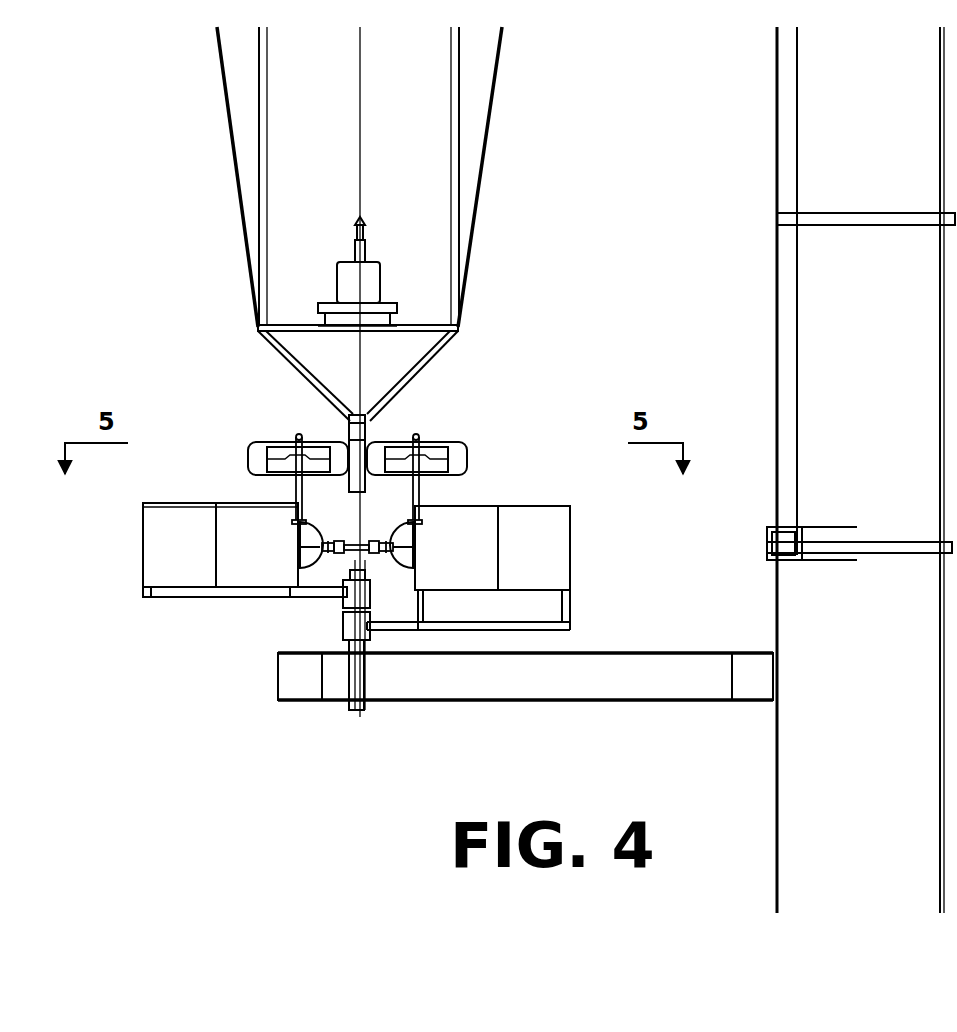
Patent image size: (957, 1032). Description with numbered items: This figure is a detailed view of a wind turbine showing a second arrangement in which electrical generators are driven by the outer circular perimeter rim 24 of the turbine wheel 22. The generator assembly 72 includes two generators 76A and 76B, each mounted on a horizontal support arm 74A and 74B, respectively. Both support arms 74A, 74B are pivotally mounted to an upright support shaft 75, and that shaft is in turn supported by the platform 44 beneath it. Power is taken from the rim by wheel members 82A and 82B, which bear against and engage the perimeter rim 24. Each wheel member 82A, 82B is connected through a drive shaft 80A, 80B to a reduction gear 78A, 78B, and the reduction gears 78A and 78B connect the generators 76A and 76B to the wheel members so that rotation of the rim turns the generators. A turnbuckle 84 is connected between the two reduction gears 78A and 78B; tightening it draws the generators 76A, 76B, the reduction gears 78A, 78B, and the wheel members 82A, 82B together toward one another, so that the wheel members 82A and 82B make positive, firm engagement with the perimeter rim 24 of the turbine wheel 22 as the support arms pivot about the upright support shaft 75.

The turbine wheel 22 is at (507, 222).
The generator assembly 72 is at (577, 340).
The perimeter rim 24 is at (368, 432).
The wheel member 82A is at (250, 445).
The wheel member 82B is at (470, 445).
The drive shaft 80A is at (294, 490).
The drive shaft 80B is at (421, 490).
The reduction gear 78A is at (343, 510).
The reduction gear 78B is at (397, 535).
The turnbuckle 84 is at (353, 555).
The generator 76A is at (204, 508).
The generator 76B is at (530, 512).
The horizontal support arm 74A is at (245, 593).
The horizontal support arm 74B is at (571, 625).
The upright support shaft 75 is at (342, 645).
The platform 44 is at (477, 700).